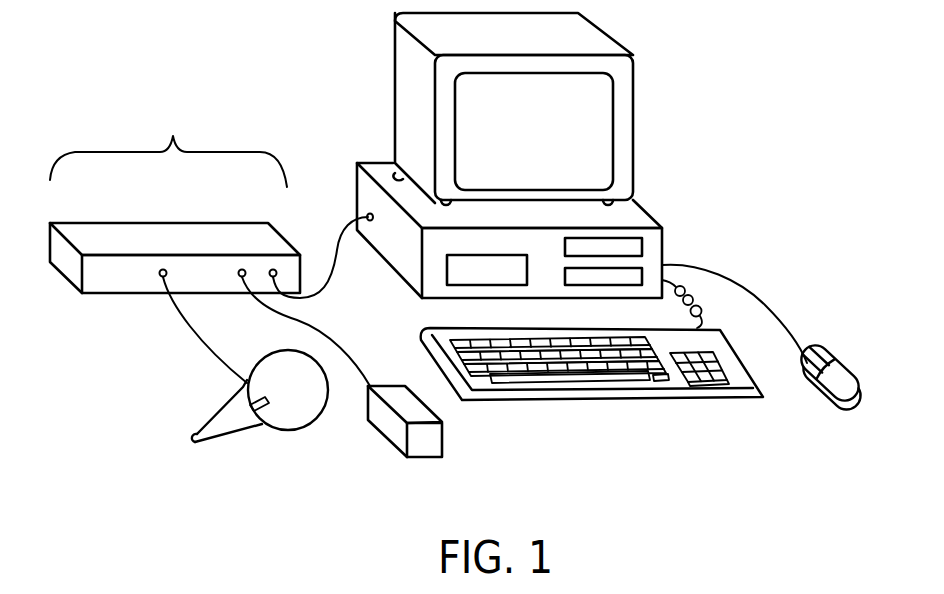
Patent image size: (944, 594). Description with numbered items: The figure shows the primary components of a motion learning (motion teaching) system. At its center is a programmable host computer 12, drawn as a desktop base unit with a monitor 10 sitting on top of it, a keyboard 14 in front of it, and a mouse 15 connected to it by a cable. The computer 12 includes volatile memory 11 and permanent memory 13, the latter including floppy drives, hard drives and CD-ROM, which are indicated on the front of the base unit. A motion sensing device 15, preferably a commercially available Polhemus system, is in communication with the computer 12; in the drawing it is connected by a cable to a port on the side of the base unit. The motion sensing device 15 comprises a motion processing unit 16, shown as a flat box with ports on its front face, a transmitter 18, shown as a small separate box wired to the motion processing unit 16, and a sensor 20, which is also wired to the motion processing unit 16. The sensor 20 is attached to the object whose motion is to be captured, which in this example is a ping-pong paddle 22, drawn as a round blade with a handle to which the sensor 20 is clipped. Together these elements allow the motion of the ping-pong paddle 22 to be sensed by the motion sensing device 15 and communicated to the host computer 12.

The monitor 10 is at (633, 107).
The volatile memory 11 is at (455, 272).
The programmable host computer 12 is at (647, 212).
The permanent memory 13 is at (640, 275).
The keyboard 14 is at (673, 402).
The mouse / motion sensing device 15 is at (833, 347).
The motion processing unit 16 is at (157, 240).
The transmitter 18 is at (443, 437).
The sensor 20 is at (260, 420).
The ping-pong paddle 22 is at (303, 427).